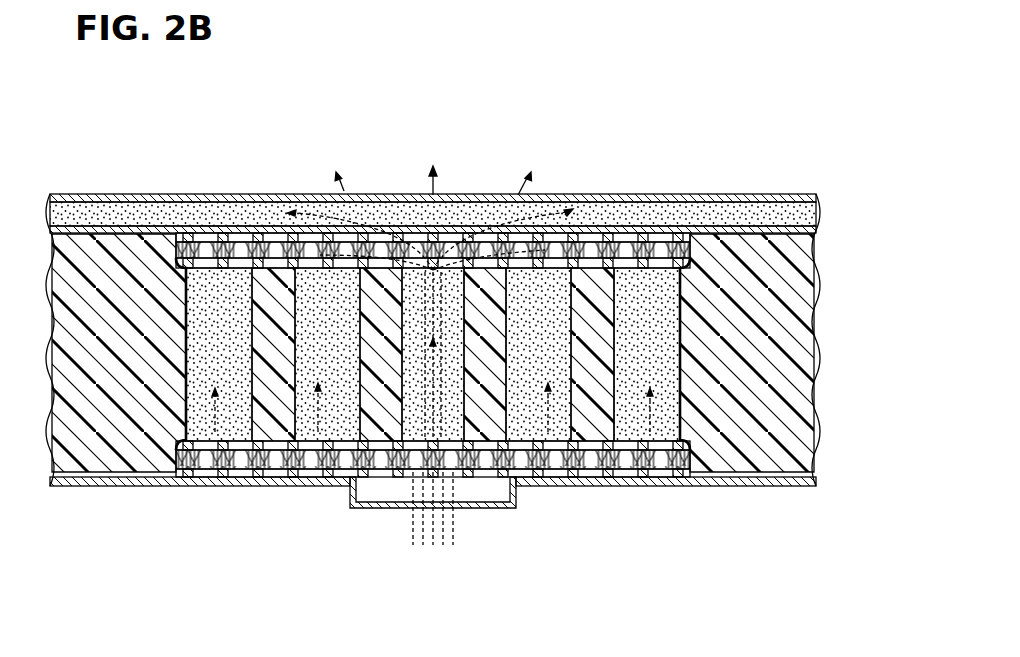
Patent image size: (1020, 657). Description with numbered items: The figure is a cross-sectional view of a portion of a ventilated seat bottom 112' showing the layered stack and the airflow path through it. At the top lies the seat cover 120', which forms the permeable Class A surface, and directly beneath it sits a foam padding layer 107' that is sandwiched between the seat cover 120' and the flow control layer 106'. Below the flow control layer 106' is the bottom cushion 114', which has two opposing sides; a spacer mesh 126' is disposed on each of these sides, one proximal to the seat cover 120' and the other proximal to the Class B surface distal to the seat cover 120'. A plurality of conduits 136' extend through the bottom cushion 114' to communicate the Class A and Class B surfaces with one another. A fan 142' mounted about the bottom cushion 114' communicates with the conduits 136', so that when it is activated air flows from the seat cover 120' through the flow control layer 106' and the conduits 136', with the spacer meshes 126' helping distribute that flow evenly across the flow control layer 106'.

The seat bottom 112' is at (432, 293).
The bottom cushion 114' is at (425, 172).
The seat cover 120' is at (433, 184).
The foam padding layer 107' is at (433, 187).
The flow control layer 106' is at (433, 205).
The spacer meshes 126' is at (433, 355).
The conduits 136' is at (434, 354).
The fan 142' is at (426, 524).